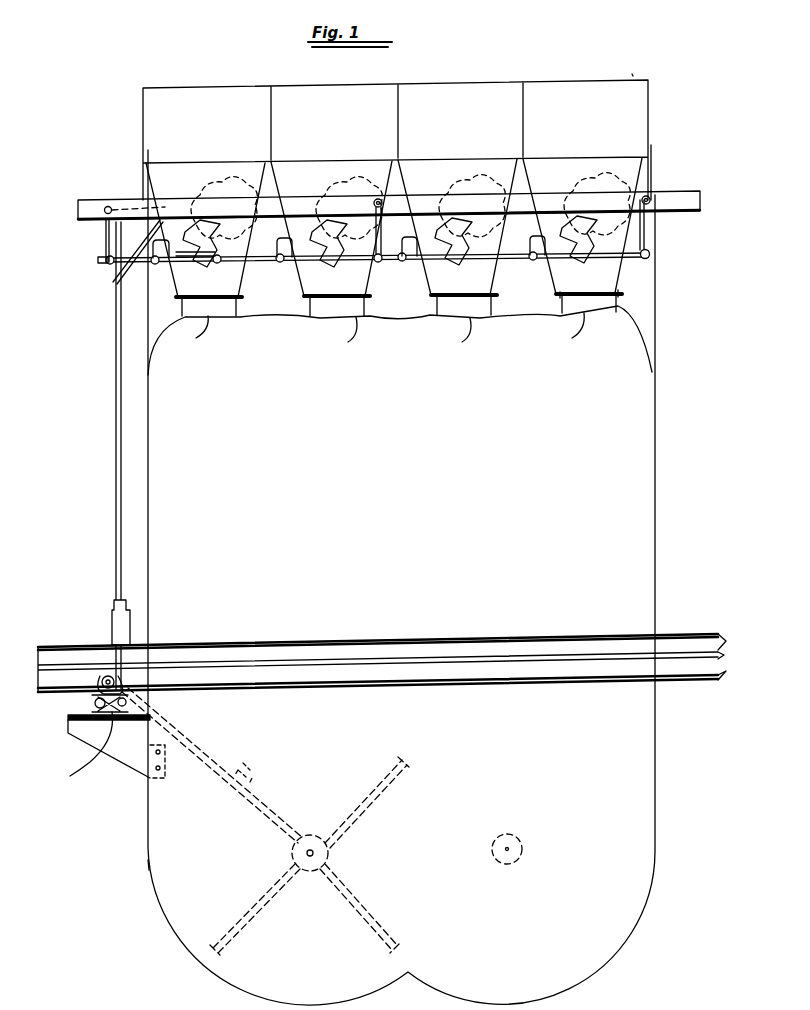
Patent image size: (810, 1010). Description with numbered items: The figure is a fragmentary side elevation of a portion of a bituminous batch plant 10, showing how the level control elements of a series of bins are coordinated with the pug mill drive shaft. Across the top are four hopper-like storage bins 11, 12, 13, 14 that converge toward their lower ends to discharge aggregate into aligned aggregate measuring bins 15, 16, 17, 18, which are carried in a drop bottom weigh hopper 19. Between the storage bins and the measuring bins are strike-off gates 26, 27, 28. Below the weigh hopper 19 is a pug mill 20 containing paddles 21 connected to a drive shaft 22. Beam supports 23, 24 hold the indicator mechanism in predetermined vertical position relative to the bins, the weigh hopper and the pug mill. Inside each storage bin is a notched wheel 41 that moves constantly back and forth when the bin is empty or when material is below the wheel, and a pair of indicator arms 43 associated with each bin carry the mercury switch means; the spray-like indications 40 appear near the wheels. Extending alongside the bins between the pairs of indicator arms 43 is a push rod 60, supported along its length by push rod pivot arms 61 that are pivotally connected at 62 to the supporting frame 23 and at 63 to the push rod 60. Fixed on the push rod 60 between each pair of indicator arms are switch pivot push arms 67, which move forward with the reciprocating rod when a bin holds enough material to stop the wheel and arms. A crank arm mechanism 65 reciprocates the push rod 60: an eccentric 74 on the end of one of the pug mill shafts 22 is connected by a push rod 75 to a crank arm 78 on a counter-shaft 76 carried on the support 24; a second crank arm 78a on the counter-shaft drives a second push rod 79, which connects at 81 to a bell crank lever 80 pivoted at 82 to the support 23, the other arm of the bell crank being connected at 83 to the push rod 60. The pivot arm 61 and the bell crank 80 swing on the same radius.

The bituminous batch plant 10 is at (642, 74).
The storage bin 11 is at (198, 94).
The storage bin 12 is at (354, 92).
The storage bin 13 is at (454, 92).
The storage bin 14 is at (566, 96).
The aggregate measuring bin 15 is at (205, 332).
The aggregate measuring bin 16 is at (358, 335).
The aggregate measuring bin 17 is at (473, 336).
The aggregate measuring bin 18 is at (581, 331).
The drop bottom weigh hopper 19 is at (640, 577).
The pug mill 20 is at (195, 826).
The paddle 21 is at (248, 772).
The drive shaft 22 is at (326, 852).
The beam support 23 is at (700, 204).
The beam support 24 is at (714, 654).
The strike-off gate 26 is at (243, 298).
The strike-off gate 27 is at (497, 296).
The strike-off gate 28 is at (622, 295).
The spray pattern 40 is at (222, 186).
The notched wheel 41 is at (345, 186).
The indicator arm 43 is at (390, 254).
The push rod 60 is at (283, 262).
The push rod pivot arm 61 is at (384, 208).
The pivotal connection 62 is at (648, 200).
The pivotal connection 63 is at (650, 254).
The crank arm mechanism 65 is at (114, 320).
The switch pivot push arm 67 is at (280, 246).
The eccentric 74 is at (308, 872).
The push rod 75 is at (206, 748).
The counter-shaft 76 is at (76, 722).
The crank arm 78 is at (106, 676).
The second crank arm 78a is at (86, 748).
The second push rod 79 is at (116, 500).
The bell crank lever 80 is at (106, 237).
The connection point 81 is at (165, 200).
The pivotal connection 82 is at (108, 206).
The connection point 83 is at (105, 263).